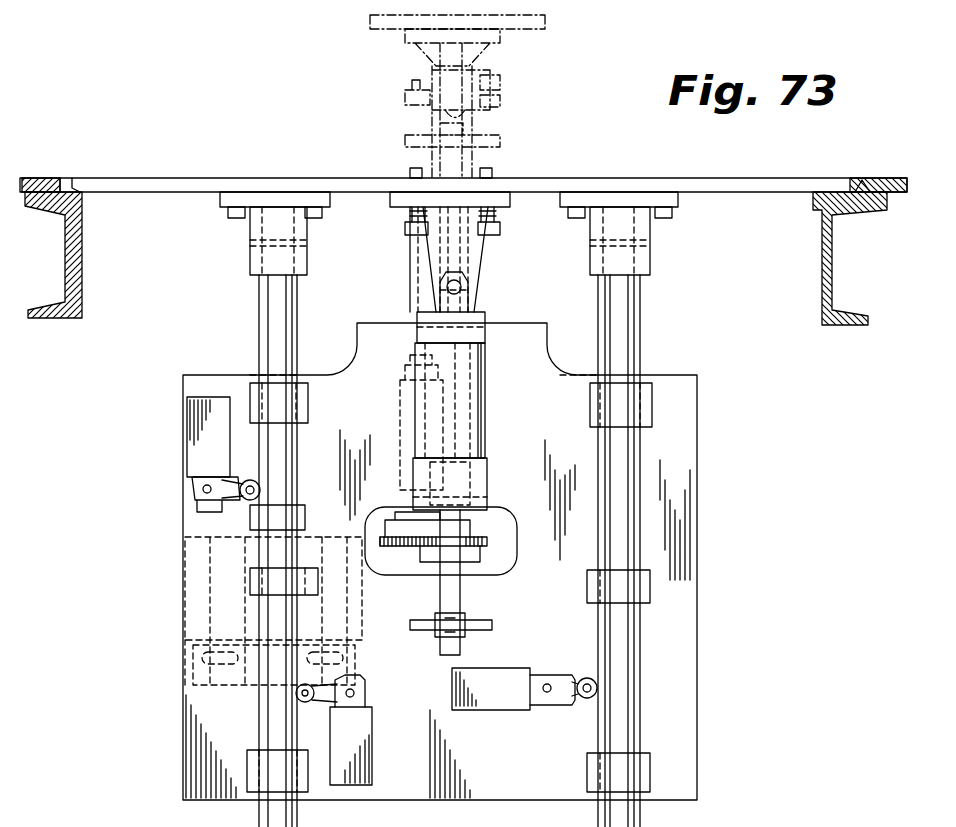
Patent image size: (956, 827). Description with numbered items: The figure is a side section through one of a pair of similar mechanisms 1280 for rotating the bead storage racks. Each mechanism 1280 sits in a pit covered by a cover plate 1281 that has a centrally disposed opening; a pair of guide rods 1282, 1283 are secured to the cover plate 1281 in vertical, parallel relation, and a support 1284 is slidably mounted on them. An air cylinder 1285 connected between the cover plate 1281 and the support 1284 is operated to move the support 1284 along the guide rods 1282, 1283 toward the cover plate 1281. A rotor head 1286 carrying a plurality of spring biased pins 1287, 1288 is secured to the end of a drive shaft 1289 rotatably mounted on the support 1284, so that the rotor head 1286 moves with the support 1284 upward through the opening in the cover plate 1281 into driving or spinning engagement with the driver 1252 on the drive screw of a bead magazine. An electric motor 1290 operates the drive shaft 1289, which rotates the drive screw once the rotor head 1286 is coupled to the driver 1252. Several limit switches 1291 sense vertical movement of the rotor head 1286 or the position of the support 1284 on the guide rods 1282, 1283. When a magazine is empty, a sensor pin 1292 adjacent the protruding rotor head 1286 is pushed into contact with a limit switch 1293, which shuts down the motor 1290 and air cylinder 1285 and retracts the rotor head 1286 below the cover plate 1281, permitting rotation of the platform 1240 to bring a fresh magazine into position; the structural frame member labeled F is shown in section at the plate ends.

The platform 1240 is at (548, 12).
The driver 1252 is at (492, 70).
The mechanism 1280 is at (570, 134).
The cover plate 1281 is at (730, 178).
The guide rod 1282 is at (638, 300).
The guide rod 1283 is at (262, 300).
The support 1284 is at (548, 330).
The air cylinder 1285 is at (485, 393).
The rotor head 1286 is at (502, 101).
The spring biased pin 1287 is at (502, 80).
The spring biased pin 1288 is at (413, 80).
The drive shaft 1289 is at (456, 263).
The electric motor 1290 is at (362, 630).
The limit switch 1291 is at (190, 445).
The sensor pin 1292 is at (412, 256).
The limit switch 1293 is at (400, 418).
The frame member F is at (893, 178).